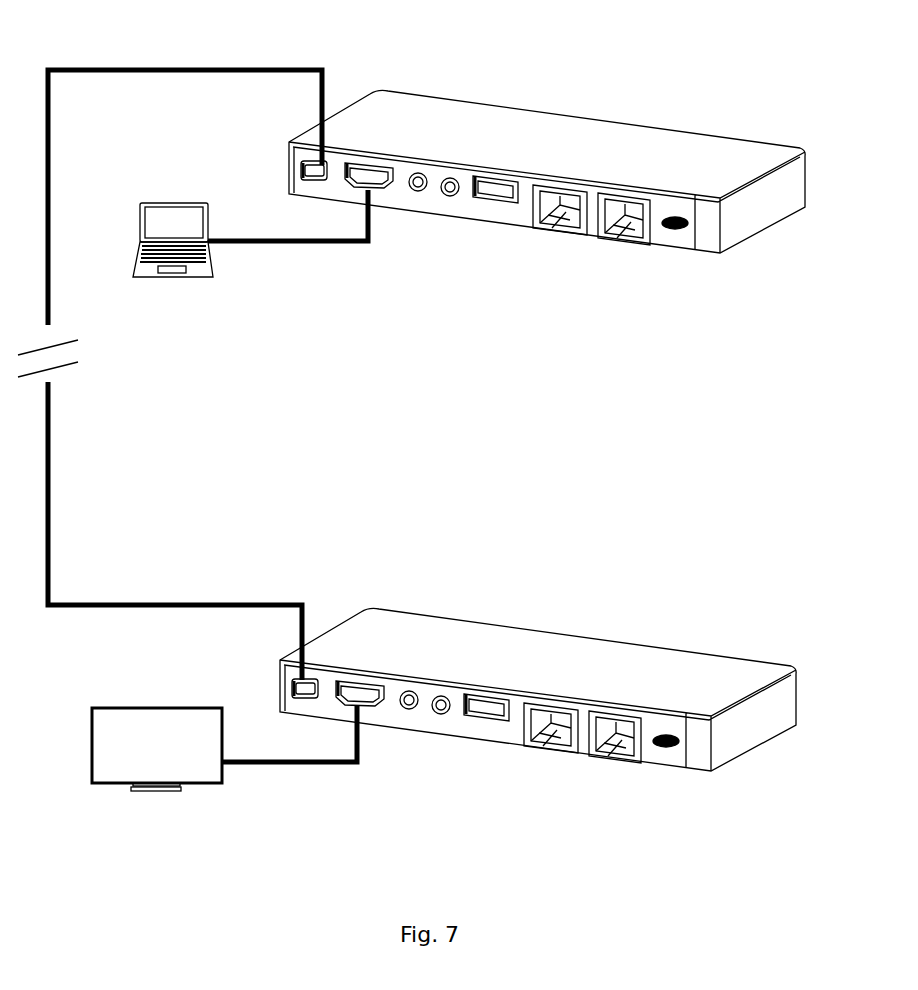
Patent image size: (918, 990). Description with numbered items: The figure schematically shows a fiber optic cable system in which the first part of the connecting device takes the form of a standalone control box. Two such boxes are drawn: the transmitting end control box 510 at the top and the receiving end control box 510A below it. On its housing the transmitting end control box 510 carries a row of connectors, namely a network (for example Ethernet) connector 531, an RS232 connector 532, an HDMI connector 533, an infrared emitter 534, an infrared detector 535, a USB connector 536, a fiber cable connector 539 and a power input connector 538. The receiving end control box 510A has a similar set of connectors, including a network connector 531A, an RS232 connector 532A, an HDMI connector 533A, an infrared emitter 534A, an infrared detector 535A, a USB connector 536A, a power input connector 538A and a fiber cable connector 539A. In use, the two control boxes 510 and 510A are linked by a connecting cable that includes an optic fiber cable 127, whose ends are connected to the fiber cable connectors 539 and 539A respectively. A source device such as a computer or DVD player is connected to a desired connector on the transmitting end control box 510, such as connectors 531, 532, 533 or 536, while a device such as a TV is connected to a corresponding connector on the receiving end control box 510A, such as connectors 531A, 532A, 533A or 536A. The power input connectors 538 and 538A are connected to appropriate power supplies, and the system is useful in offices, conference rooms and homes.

The optic fiber cable 127 is at (50, 482).
The transmitting end control box 510 is at (568, 143).
The receiving end control box 510A is at (476, 672).
The network connector 531 is at (558, 232).
The network connector 531A is at (545, 764).
The RS232 connector 532 is at (622, 244).
The RS232 connector 532A is at (613, 768).
The HDMI connector 533 is at (368, 168).
The HDMI connector 533A is at (354, 621).
The infrared emitter 534 is at (418, 175).
The infrared emitter 534A is at (417, 614).
The infrared detector 535 is at (450, 178).
The infrared detector 535A is at (454, 646).
The USB connector 536 is at (490, 202).
The USB connector 536A is at (479, 760).
The power input connector 538 is at (675, 230).
The power input connector 538A is at (678, 780).
The fiber cable connector 539 is at (300, 165).
The fiber cable connector 539A is at (237, 665).